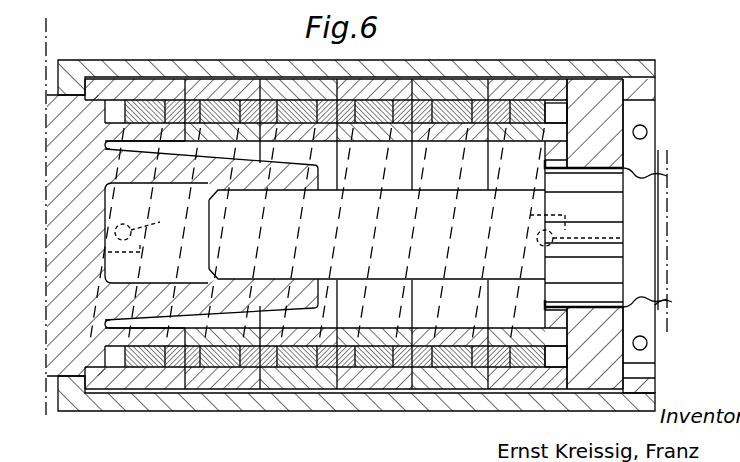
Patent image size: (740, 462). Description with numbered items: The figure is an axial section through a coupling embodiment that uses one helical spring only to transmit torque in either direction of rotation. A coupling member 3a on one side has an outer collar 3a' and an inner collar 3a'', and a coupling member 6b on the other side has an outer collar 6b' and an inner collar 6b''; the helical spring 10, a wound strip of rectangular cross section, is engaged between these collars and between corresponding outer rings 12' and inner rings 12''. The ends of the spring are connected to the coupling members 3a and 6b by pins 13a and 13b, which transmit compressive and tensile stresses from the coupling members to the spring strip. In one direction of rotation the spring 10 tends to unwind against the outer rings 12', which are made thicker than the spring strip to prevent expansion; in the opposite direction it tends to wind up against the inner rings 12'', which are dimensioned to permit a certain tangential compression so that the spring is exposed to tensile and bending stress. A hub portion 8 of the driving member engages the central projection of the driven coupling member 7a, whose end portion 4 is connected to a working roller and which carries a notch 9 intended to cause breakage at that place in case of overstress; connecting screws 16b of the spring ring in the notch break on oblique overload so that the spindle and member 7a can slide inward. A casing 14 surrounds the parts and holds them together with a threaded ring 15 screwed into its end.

The coupling member 3a is at (307, 268).
The outer collar 3a' is at (326, 212).
The inner collar 3a'' is at (152, 181).
The coupling member 6b is at (611, 212).
The outer collar 6b' is at (376, 212).
The inner collar 6b'' is at (382, 199).
The connecting screw 16b is at (648, 129).
The end portion 4 is at (664, 223).
The notch 9 is at (671, 307).
The pin 13a is at (147, 229).
The pin 13b is at (593, 231).
The threaded ring 15 is at (645, 396).
The hub portion 8 is at (160, 292).
The helical spring 10 is at (207, 358).
The outer ring 12' is at (337, 270).
The inner ring 12'' is at (330, 270).
The driven coupling member 7a is at (347, 268).
The casing 14 is at (378, 398).